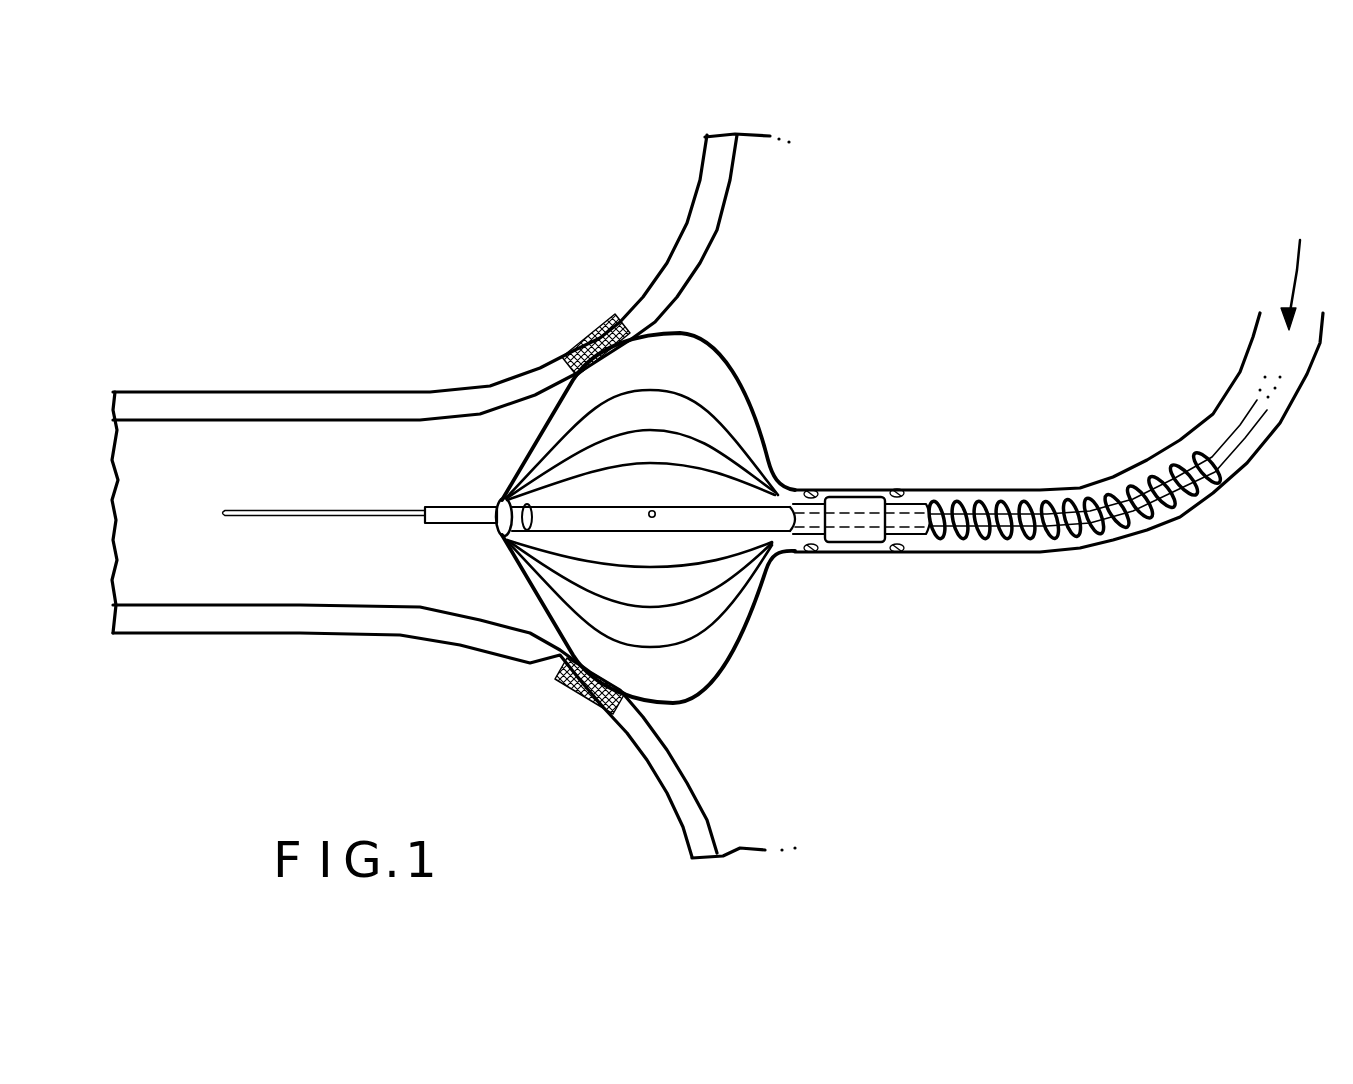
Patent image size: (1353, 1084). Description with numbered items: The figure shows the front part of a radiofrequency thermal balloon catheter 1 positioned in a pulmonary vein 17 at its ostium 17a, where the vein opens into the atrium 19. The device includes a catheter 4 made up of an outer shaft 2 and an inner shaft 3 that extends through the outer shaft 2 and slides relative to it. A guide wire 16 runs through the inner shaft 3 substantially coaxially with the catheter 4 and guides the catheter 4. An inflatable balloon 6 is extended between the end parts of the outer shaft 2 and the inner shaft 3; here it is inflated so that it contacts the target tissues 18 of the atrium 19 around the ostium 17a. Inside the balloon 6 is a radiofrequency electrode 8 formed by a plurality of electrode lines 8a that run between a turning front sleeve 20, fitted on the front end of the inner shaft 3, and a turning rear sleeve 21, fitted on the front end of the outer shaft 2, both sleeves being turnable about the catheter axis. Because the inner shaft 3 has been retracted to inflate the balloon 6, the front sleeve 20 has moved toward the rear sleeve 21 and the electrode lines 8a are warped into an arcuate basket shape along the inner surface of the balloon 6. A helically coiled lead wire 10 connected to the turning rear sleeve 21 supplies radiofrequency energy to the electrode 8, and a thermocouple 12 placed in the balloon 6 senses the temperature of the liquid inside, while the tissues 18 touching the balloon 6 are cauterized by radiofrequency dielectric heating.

The radiofrequency thermal balloon catheter 1 is at (773, 525).
The outer shaft 2 is at (1059, 465).
The inner shaft 3 is at (829, 496).
The catheter 4 is at (1096, 610).
The balloon 6 is at (648, 489).
The radiofrequency electrode 8 is at (661, 489).
The electrode lines 8a is at (664, 542).
The lead wire 10 is at (1075, 533).
The thermocouple 12 is at (624, 495).
The guide wire 16 is at (324, 549).
The pulmonary vein 17 is at (454, 496).
The ostium 17a is at (415, 729).
The tissues 18 is at (576, 524).
The atrium 19 is at (983, 262).
The turning front sleeve 20 is at (483, 543).
The turning rear sleeve 21 is at (855, 555).